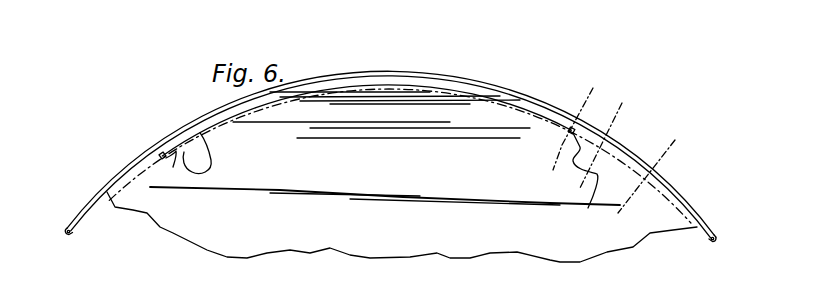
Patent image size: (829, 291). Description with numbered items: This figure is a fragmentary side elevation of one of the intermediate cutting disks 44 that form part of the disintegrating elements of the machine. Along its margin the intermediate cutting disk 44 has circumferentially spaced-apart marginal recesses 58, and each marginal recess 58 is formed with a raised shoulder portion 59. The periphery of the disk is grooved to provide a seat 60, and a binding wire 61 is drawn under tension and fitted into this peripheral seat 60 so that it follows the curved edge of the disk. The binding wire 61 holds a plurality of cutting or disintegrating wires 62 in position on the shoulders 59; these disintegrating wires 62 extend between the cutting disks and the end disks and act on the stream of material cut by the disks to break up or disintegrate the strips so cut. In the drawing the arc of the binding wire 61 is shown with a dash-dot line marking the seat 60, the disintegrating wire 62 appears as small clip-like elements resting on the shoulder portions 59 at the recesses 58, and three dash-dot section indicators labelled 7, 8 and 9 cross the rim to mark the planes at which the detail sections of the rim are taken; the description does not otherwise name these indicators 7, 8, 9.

The intermediate cutting disk 44 is at (402, 177).
The marginal recess 58 is at (220, 153).
The raised shoulder portion 59 is at (174, 167).
The seat 60 is at (512, 105).
The binding wire 61 is at (467, 78).
The disintegrating wire 62 is at (160, 160).
The section line 7- 7 is at (572, 131).
The section line 8- 8 is at (600, 147).
The section line 9- 9 is at (650, 179).